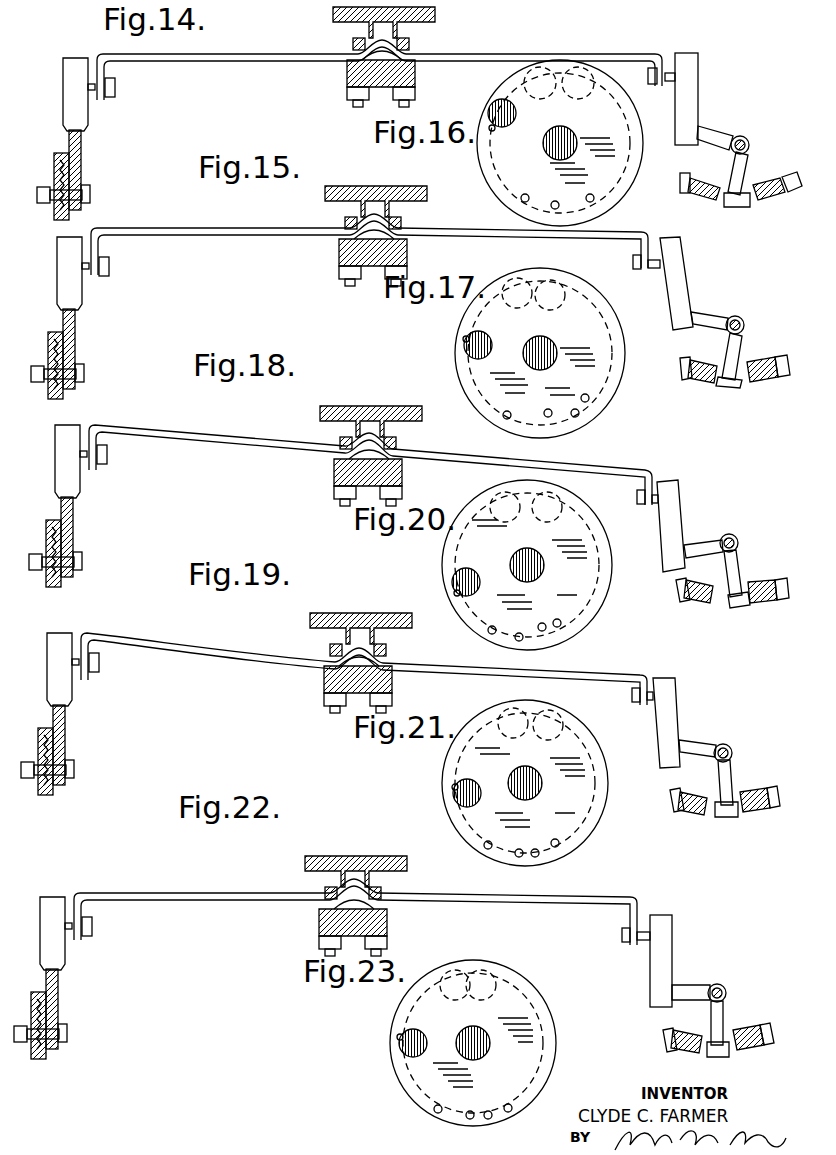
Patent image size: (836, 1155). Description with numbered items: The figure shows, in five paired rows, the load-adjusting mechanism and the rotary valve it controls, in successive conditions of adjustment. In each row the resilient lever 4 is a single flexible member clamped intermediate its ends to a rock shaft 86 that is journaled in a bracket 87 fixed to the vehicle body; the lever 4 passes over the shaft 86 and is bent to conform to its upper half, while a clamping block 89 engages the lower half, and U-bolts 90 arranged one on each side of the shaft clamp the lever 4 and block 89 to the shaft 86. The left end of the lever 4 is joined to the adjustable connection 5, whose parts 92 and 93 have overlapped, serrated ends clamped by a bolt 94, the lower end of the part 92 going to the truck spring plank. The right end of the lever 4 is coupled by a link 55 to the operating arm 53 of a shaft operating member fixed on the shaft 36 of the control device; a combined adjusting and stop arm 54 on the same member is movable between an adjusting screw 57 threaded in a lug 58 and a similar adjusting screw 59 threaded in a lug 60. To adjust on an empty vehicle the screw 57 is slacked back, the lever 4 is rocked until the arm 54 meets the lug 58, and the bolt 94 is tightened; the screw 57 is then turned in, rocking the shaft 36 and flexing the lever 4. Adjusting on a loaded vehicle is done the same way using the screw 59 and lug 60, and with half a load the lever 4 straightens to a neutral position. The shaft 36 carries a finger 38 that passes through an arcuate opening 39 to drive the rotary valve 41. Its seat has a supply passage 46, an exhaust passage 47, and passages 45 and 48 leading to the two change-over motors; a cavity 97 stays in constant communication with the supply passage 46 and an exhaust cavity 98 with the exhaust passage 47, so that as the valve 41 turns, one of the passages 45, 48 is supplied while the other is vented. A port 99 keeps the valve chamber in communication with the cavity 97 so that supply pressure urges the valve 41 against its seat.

In FIG. 14, the resilient lever 4 is at (207, 72).
In FIG. 15, the resilient lever 4 is at (199, 248).
In FIG. 18, the resilient lever 4 is at (194, 454).
In FIG. 19, the resilient lever 4 is at (182, 663).
In FIG. 22, the resilient lever 4 is at (177, 910).
In FIG. 14, the adjustable connection 5 is at (98, 122).
In FIG. 15, the adjustable connection 5 is at (90, 273).
In FIG. 18, the adjustable connection 5 is at (88, 461).
In FIG. 19, the adjustable connection 5 is at (80, 669).
In FIG. 22, the adjustable connection 5 is at (73, 933).
In FIG. 14, the part 93 is at (81, 150).
In FIG. 15, the part 93 is at (92, 349).
In FIG. 18, the part 93 is at (90, 537).
In FIG. 19, the part 93 is at (82, 745).
In FIG. 22, the part 93 is at (75, 1009).
In FIG. 14, the bolt 94 is at (80, 192).
In FIG. 15, the bolt 94 is at (85, 365).
In FIG. 18, the bolt 94 is at (83, 553).
In FIG. 19, the bolt 94 is at (75, 761).
In FIG. 22, the bolt 94 is at (68, 1025).
In FIG. 14, the part 92 is at (62, 218).
In FIG. 15, the part 92 is at (76, 378).
In FIG. 18, the part 92 is at (74, 566).
In FIG. 19, the part 92 is at (66, 774).
In FIG. 22, the part 92 is at (59, 1038).
In FIG. 14, the bracket 87 is at (435, 15).
In FIG. 15, the bracket 87 is at (391, 201).
In FIG. 18, the bracket 87 is at (386, 421).
In FIG. 19, the bracket 87 is at (376, 628).
In FIG. 22, the bracket 87 is at (371, 871).
In FIG. 14, the U-bolts 90 is at (353, 44).
In FIG. 15, the U-bolts 90 is at (377, 216).
In FIG. 18, the U-bolts 90 is at (372, 436).
In FIG. 19, the U-bolts 90 is at (362, 643).
In FIG. 22, the U-bolts 90 is at (357, 886).
In FIG. 14, the clamping block 89 is at (348, 70).
In FIG. 15, the clamping block 89 is at (350, 248).
In FIG. 18, the clamping block 89 is at (345, 468).
In FIG. 19, the clamping block 89 is at (335, 675).
In FIG. 22, the clamping block 89 is at (330, 918).
In FIG. 14, the rock shaft 86 is at (352, 84).
In FIG. 15, the rock shaft 86 is at (350, 274).
In FIG. 18, the rock shaft 86 is at (345, 494).
In FIG. 19, the rock shaft 86 is at (335, 701).
In FIG. 22, the rock shaft 86 is at (330, 944).
In FIG. 14, the link 55 is at (685, 92).
In FIG. 15, the link 55 is at (683, 285).
In FIG. 18, the link 55 is at (670, 510).
In FIG. 19, the link 55 is at (668, 710).
In FIG. 22, the link 55 is at (662, 957).
In FIG. 14, the operating arm 53 is at (719, 135).
In FIG. 15, the operating arm 53 is at (708, 318).
In FIG. 18, the operating arm 53 is at (705, 543).
In FIG. 19, the operating arm 53 is at (700, 748).
In FIG. 22, the operating arm 53 is at (700, 975).
In FIG. 14, the shaft 36 is at (745, 136).
In FIG. 15, the shaft 36 is at (738, 316).
In FIG. 18, the shaft 36 is at (731, 534).
In FIG. 19, the shaft 36 is at (725, 744).
In FIG. 22, the shaft 36 is at (720, 985).
In FIG. 14, the combined adjusting and stop arm 54 is at (737, 175).
In FIG. 15, the combined adjusting and stop arm 54 is at (735, 355).
In FIG. 18, the combined adjusting and stop arm 54 is at (735, 570).
In FIG. 19, the combined adjusting and stop arm 54 is at (727, 785).
In FIG. 22, the combined adjusting and stop arm 54 is at (720, 1030).
In FIG. 14, the adjusting screw 57 is at (685, 195).
In FIG. 15, the adjusting screw 57 is at (684, 378).
In FIG. 18, the adjusting screw 57 is at (684, 600).
In FIG. 19, the adjusting screw 57 is at (676, 805).
In FIG. 22, the adjusting screw 57 is at (665, 1040).
In FIG. 14, the lug 58 is at (707, 200).
In FIG. 15, the lug 58 is at (700, 380).
In FIG. 18, the lug 58 is at (705, 603).
In FIG. 19, the lug 58 is at (690, 810).
In FIG. 22, the lug 58 is at (685, 1050).
In FIG. 14, the lug 60 is at (772, 184).
In FIG. 15, the lug 60 is at (762, 362).
In FIG. 18, the lug 60 is at (760, 582).
In FIG. 19, the lug 60 is at (755, 792).
In FIG. 22, the lug 60 is at (748, 1030).
In FIG. 14, the adjusting screw 59 is at (793, 178).
In FIG. 15, the adjusting screw 59 is at (783, 357).
In FIG. 18, the adjusting screw 59 is at (782, 580).
In FIG. 19, the adjusting screw 59 is at (772, 790).
In FIG. 22, the adjusting screw 59 is at (767, 1025).
In FIG. 16, the cavity 97 is at (575, 143).
In FIG. 17, the cavity 97 is at (553, 353).
In FIG. 20, the cavity 97 is at (544, 565).
In FIG. 21, the cavity 97 is at (545, 783).
In FIG. 23, the cavity 97 is at (481, 1043).
In FIG. 16, the rotary valve 41 is at (533, 143).
In FIG. 17, the rotary valve 41 is at (519, 353).
In FIG. 20, the rotary valve 41 is at (509, 565).
In FIG. 21, the rotary valve 41 is at (502, 783).
In FIG. 23, the rotary valve 41 is at (448, 1043).
In FIG. 16, the finger 38 is at (594, 90).
In FIG. 17, the finger 38 is at (563, 276).
In FIG. 20, the finger 38 is at (479, 497).
In FIG. 21, the finger 38 is at (487, 709).
In FIG. 23, the finger 38 is at (478, 965).
In FIG. 16, the arcuate opening 39 is at (503, 80).
In FIG. 17, the arcuate opening 39 is at (507, 275).
In FIG. 20, the arcuate opening 39 is at (570, 499).
In FIG. 21, the arcuate opening 39 is at (566, 712).
In FIG. 23, the arcuate opening 39 is at (519, 967).
In FIG. 16, the supply passage 46 is at (474, 105).
In FIG. 17, the supply passage 46 is at (459, 348).
In FIG. 20, the supply passage 46 is at (445, 567).
In FIG. 21, the supply passage 46 is at (440, 800).
In FIG. 23, the supply passage 46 is at (390, 1048).
In FIG. 16, the port 99 is at (511, 138).
In FIG. 17, the port 99 is at (448, 331).
In FIG. 20, the port 99 is at (439, 594).
In FIG. 21, the port 99 is at (433, 786).
In FIG. 23, the port 99 is at (380, 1029).
In FIG. 16, the passage 45 is at (565, 180).
In FIG. 17, the passage 45 is at (492, 431).
In FIG. 20, the passage 45 is at (495, 611).
In FIG. 21, the passage 45 is at (445, 835).
In FIG. 23, the passage 45 is at (406, 1117).
In FIG. 16, the exhaust passage 47 is at (597, 217).
In FIG. 17, the exhaust passage 47 is at (611, 421).
In FIG. 20, the exhaust passage 47 is at (562, 648).
In FIG. 21, the exhaust passage 47 is at (494, 871).
In FIG. 23, the exhaust passage 47 is at (441, 1133).
In FIG. 16, the passage 48 is at (627, 198).
In FIG. 17, the passage 48 is at (616, 400).
In FIG. 20, the passage 48 is at (601, 641).
In FIG. 21, the passage 48 is at (571, 866).
In FIG. 23, the passage 48 is at (520, 1129).
In FIG. 16, the exhaust cavity 98 is at (498, 212).
In FIG. 17, the exhaust cavity 98 is at (567, 426).
In FIG. 20, the exhaust cavity 98 is at (558, 601).
In FIG. 21, the exhaust cavity 98 is at (525, 871).
In FIG. 23, the exhaust cavity 98 is at (475, 1133).